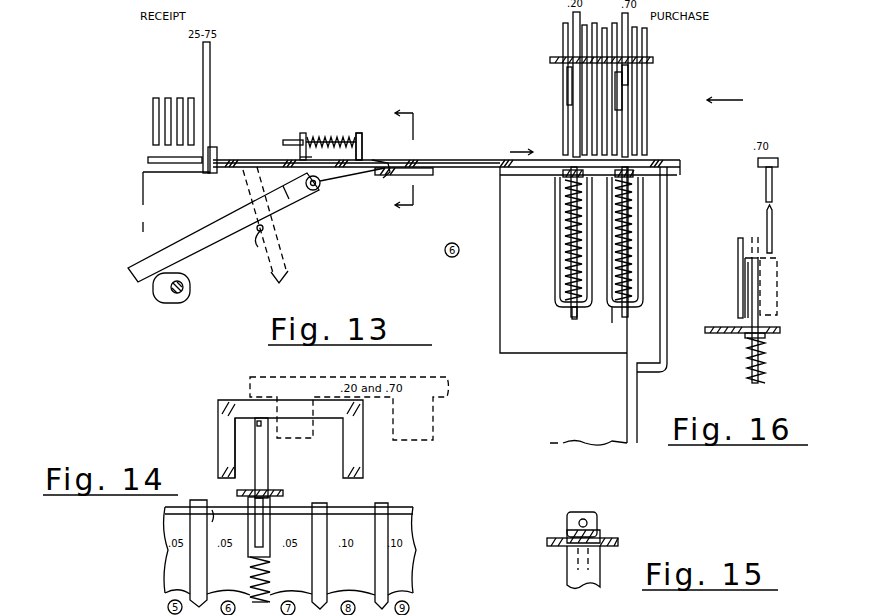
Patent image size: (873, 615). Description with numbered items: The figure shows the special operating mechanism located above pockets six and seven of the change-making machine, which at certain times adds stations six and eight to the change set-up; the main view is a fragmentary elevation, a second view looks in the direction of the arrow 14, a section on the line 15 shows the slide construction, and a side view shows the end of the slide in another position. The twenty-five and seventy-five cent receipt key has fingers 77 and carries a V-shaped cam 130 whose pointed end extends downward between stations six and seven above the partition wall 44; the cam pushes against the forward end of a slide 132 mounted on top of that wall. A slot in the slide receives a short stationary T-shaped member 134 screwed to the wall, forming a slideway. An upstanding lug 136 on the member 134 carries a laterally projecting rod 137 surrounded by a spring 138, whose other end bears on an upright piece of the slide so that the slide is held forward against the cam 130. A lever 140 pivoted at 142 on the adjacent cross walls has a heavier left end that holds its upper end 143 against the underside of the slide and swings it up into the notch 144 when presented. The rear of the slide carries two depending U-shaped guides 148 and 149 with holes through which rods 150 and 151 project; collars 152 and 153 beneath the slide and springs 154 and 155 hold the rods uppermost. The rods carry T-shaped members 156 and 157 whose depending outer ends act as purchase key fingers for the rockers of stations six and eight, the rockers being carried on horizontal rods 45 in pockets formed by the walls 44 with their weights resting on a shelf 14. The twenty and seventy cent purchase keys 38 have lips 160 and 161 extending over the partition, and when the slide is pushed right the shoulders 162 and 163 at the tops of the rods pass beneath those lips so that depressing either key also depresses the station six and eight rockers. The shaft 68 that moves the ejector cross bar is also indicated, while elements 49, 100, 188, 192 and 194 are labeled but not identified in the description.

In FIG. 13, the shelf 14 is at (739, 106).
In FIG. 13, the section line 15— 15 is at (416, 162).
In FIG. 16, the purchase key 38 is at (779, 162).
In FIG. 13, the partition wall 44 is at (152, 193).
In FIG. 14, the partition wall 44 is at (195, 571).
In FIG. 15, the partition wall 44 is at (597, 565).
In FIG. 13, the horizontal rod 45 is at (245, 245).
In FIG. 14, the notch 49 is at (358, 509).
In FIG. 13, the shaft 68 is at (190, 291).
In FIG. 13, the 25—75 cent receipt key fingers 77 is at (210, 68).
In FIG. 14, the track 100 is at (165, 509).
In FIG. 13, the cam 130 is at (213, 152).
In FIG. 13, the slide 132 is at (272, 158).
In FIG. 14, the slide 132 is at (237, 493).
In FIG. 15, the slide 132 is at (550, 547).
In FIG. 16, the slide 132 is at (723, 327).
In FIG. 13, the T-shaped member 134 is at (420, 160).
In FIG. 15, the T-shaped member 134 is at (568, 532).
In FIG. 13, the upstanding lug 136 is at (366, 133).
In FIG. 15, the upstanding lug 136 is at (582, 513).
In FIG. 13, the laterally projecting rod 137 is at (288, 140).
In FIG. 15, the laterally projecting rod 137 is at (588, 523).
In FIG. 13, the spring 138 is at (316, 135).
In FIG. 13, the lever 140 is at (202, 238).
In FIG. 13, the pivot 142 is at (313, 190).
In FIG. 13, the upper end of lever 143 is at (383, 178).
In FIG. 13, the slot 144 is at (370, 163).
In FIG. 13, the U-shaped guide 148 is at (560, 262).
In FIG. 13, the U-shaped guide 149 is at (613, 317).
In FIG. 13, the rod 150 is at (570, 315).
In FIG. 13, the rod 151 is at (631, 317).
In FIG. 14, the rod 151 is at (262, 468).
In FIG. 16, the rod 151 is at (778, 287).
In FIG. 13, the collar 152 is at (567, 177).
In FIG. 13, the collar 153 is at (640, 176).
In FIG. 16, the collar 153 is at (770, 333).
In FIG. 13, the spring 154 is at (572, 232).
In FIG. 13, the spring 155 is at (632, 230).
In FIG. 14, the spring 155 is at (270, 568).
In FIG. 16, the spring 155 is at (765, 350).
In FIG. 13, the T-shaped member 156 is at (563, 85).
In FIG. 13, the T-shaped member 157 is at (618, 128).
In FIG. 14, the T-shaped member 157 is at (218, 425).
In FIG. 16, the T-shaped member 157 is at (738, 285).
In FIG. 13, the lip 160 is at (570, 68).
In FIG. 13, the lip 161 is at (627, 72).
In FIG. 14, the lip 161 is at (250, 380).
In FIG. 16, the lip 161 is at (772, 240).
In FIG. 13, the shoulder 162 is at (572, 92).
In FIG. 13, the shoulder 163 is at (620, 90).
In FIG. 14, the shoulder 163 is at (222, 405).
In FIG. 16, the shoulder 163 is at (776, 262).
In FIG. 14, the station 188 is at (447, 606).
In FIG. 14, the station 192 is at (529, 607).
In FIG. 14, the station 194 is at (407, 512).